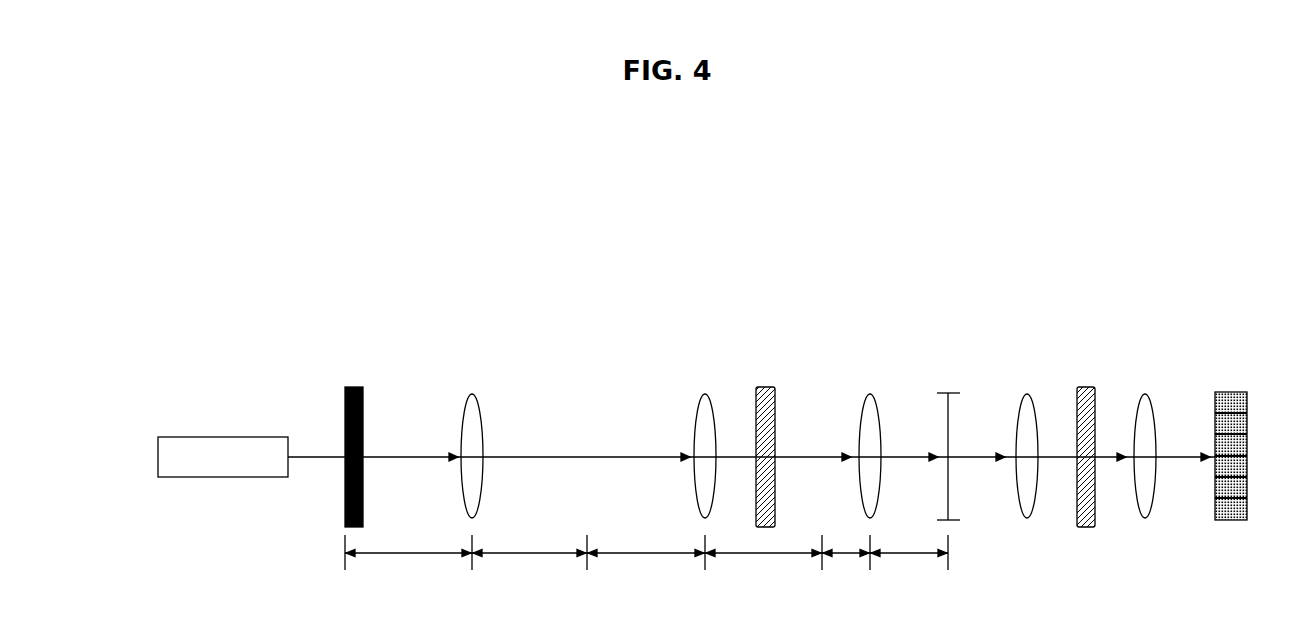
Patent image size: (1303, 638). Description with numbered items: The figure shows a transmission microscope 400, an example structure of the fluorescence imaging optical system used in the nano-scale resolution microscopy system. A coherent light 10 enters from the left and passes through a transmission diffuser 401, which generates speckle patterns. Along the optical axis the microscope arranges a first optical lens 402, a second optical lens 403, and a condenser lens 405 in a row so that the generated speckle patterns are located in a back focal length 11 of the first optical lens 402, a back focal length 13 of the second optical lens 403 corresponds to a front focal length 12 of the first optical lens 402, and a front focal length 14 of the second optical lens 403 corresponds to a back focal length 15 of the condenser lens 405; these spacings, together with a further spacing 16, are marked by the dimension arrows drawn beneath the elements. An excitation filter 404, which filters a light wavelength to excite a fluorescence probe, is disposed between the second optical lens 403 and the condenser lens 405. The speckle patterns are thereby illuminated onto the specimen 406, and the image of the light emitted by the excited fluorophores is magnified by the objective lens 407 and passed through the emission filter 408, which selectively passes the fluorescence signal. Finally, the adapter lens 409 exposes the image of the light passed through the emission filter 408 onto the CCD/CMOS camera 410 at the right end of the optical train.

The coherent light 10 is at (220, 437).
The transmission microscope 400 is at (672, 178).
The transmission diffuser 401 is at (349, 386).
The first optical lens 402 is at (470, 394).
The second optical lens 403 is at (703, 394).
The excitation filter 404 is at (760, 387).
The condenser lens 405 is at (870, 394).
The specimen 406 is at (948, 393).
The objective lens 407 is at (1027, 394).
The emission filter 408 is at (1080, 387).
The adapter lens 409 is at (1145, 394).
The CCD/CMOS camera 410 is at (1228, 392).
The back focal length of the first optical lens 11 is at (412, 560).
The front focal length of the first optical lens 12 is at (530, 560).
The back focal length of the second optical lens 13 is at (647, 560).
The front focal length of the second optical lens 14 is at (763, 560).
The back focal length of the condenser lens 15 is at (847, 560).
The sixth distance 16 is at (908, 560).